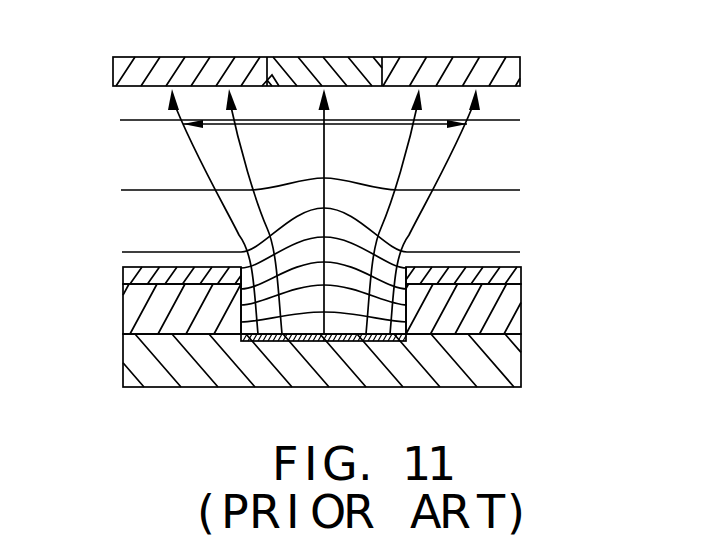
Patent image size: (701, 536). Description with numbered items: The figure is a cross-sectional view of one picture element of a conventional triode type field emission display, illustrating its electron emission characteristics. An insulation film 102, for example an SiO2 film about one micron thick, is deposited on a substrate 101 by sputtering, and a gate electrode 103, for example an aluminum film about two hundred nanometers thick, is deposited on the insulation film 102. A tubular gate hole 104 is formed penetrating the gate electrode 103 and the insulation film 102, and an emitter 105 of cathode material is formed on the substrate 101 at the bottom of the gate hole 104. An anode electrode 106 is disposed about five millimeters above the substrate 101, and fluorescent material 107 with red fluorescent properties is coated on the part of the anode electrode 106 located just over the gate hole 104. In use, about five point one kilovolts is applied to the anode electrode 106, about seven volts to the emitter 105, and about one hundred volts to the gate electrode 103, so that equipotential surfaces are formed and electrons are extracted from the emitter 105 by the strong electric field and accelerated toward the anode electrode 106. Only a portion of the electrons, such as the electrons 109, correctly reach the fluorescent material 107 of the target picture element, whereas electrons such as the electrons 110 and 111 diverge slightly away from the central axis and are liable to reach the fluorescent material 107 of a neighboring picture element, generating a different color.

The substrate 101 is at (506, 357).
The insulation film 102 is at (510, 311).
The gate electrode 103 is at (521, 279).
The gate hole 104 is at (252, 297).
The emitter 105 is at (252, 342).
The anode electrode 106 is at (514, 70).
The fluorescent material 107 is at (348, 63).
The electrons 109 is at (322, 191).
The electrons 110 is at (240, 157).
The electrons 111 is at (183, 141).